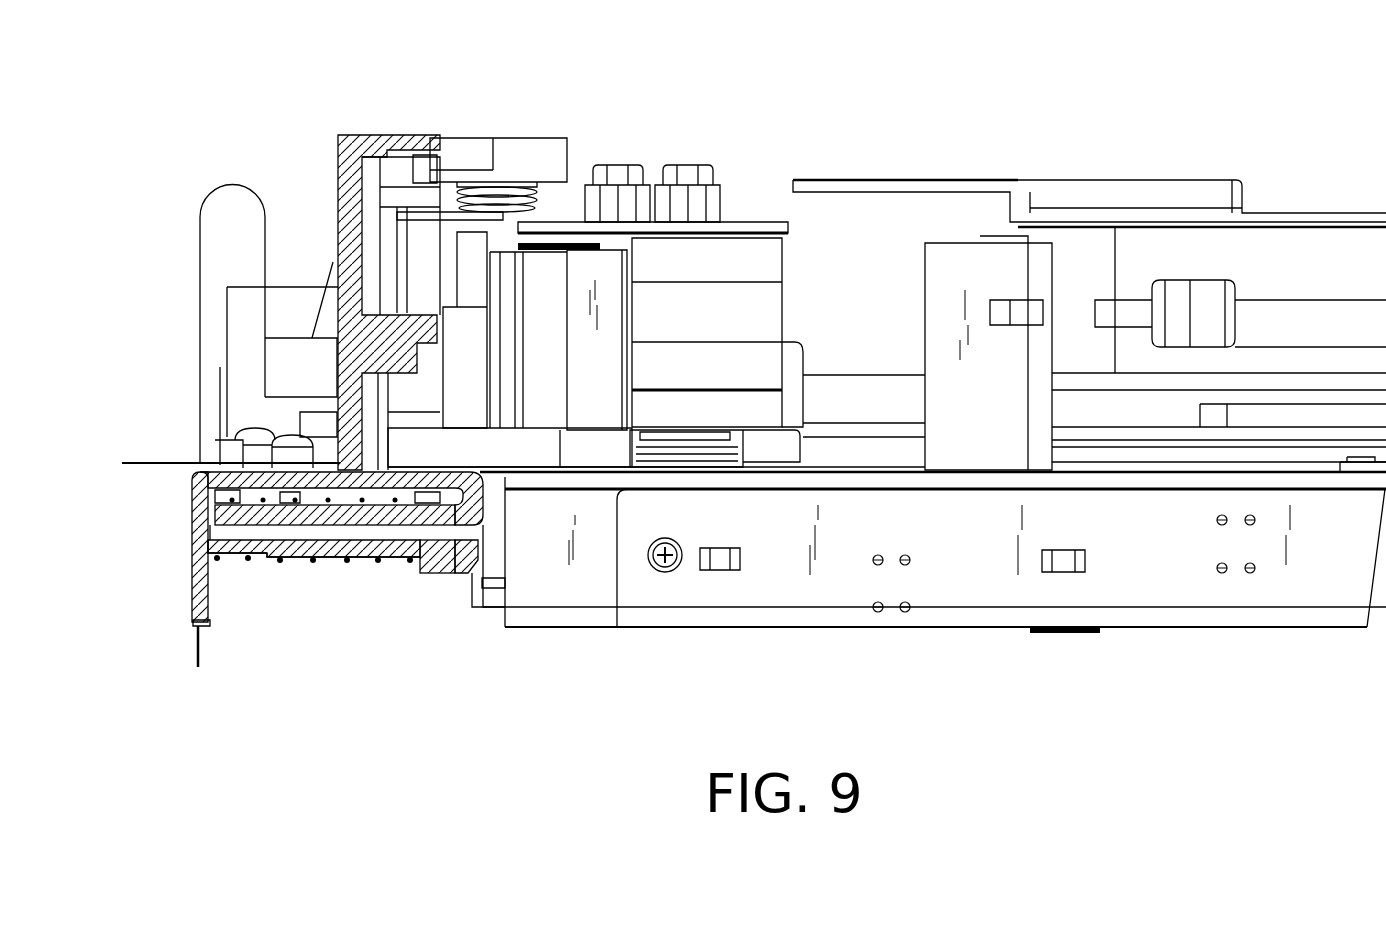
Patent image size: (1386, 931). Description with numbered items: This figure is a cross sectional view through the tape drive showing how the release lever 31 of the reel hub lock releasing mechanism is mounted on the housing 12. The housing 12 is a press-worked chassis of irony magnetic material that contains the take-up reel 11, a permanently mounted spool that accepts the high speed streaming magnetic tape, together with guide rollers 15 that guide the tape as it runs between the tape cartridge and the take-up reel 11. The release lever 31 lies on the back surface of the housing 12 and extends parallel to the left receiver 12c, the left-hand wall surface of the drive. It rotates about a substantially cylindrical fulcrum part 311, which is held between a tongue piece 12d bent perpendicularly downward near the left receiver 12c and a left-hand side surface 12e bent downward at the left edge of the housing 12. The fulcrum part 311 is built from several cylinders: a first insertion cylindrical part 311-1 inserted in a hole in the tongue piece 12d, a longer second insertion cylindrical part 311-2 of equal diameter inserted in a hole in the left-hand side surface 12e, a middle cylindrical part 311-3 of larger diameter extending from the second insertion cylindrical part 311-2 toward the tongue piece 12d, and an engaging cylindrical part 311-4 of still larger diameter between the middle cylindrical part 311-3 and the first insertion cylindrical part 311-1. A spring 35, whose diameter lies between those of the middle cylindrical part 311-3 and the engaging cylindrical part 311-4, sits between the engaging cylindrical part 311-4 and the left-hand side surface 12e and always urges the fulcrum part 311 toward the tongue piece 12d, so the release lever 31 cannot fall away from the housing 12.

The take-up reel 11 is at (893, 183).
The housing 12 is at (200, 492).
The left receiver 12c is at (345, 183).
The tongue piece 12d is at (462, 578).
The left-hand side surface 12e is at (192, 585).
The guide rollers 15 is at (743, 255).
The release lever 31 is at (437, 577).
The spring 35 is at (250, 565).
The fulcrum part 311 is at (393, 563).
The first insertion cylindrical part 311-1 is at (473, 568).
The second insertion cylindrical part 311-2 is at (220, 563).
The middle cylindrical part 311-3 is at (325, 563).
The engaging cylindrical part 311-4 is at (428, 577).